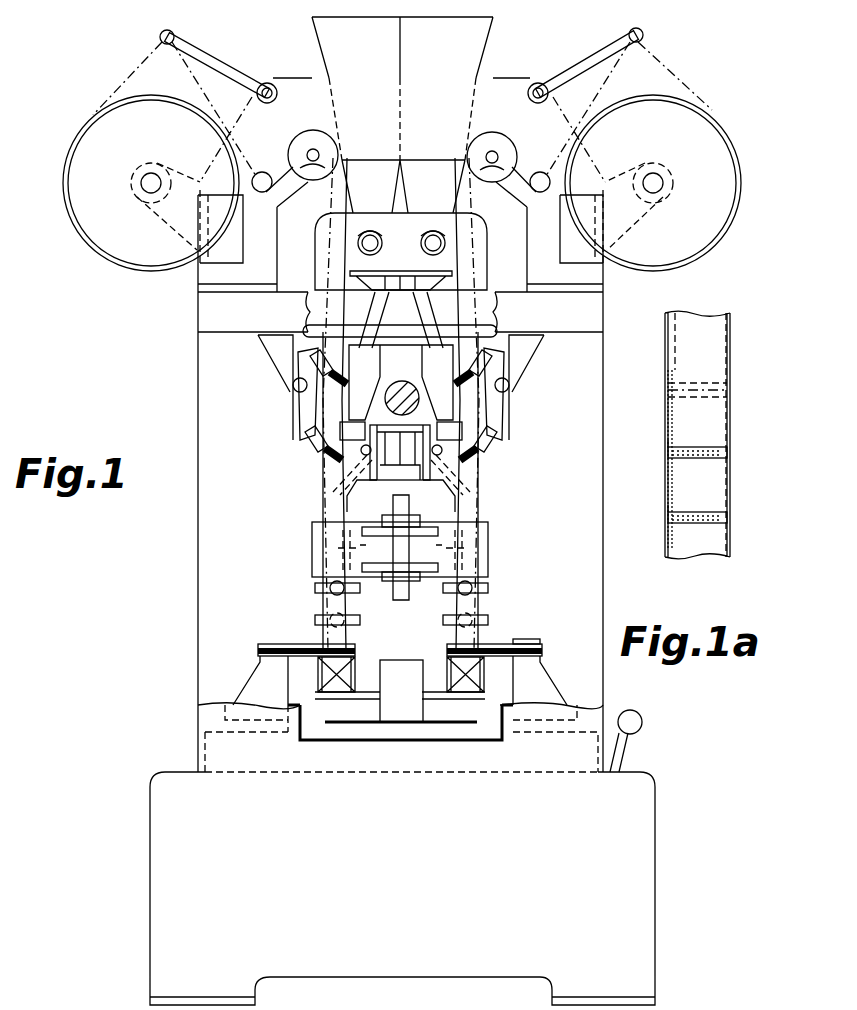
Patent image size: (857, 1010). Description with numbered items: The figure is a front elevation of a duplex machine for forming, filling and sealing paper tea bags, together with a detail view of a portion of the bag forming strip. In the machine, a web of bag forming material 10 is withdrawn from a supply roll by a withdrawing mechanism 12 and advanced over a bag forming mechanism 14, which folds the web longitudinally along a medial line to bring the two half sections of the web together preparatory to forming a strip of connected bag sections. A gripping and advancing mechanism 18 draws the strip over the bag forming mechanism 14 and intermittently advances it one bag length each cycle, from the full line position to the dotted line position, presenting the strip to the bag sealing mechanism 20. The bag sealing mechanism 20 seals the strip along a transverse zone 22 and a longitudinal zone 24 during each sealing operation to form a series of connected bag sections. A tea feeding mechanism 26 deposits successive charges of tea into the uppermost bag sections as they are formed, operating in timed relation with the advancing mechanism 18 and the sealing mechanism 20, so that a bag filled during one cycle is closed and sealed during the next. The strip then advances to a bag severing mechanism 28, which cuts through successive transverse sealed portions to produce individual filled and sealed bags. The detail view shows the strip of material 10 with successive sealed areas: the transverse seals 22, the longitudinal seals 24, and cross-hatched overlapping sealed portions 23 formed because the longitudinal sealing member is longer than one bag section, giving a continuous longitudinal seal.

In FIG. 1, the web of bag forming material 10 is at (143, 60).
In FIG. 1A, the web of bag forming material 10 is at (732, 330).
In FIG. 1, the withdrawing mechanism 12 is at (318, 128).
In FIG. 1, the bag forming mechanism 14 is at (338, 283).
In FIG. 1, the gripping and advancing mechanism 18 is at (308, 616).
In FIG. 1, the bag sealing mechanism 20 is at (304, 535).
In FIG. 1, the transverse zone 22 is at (320, 556).
In FIG. 1A, the transverse zone 22 is at (705, 383).
In FIG. 1A, the overlapping sealed portions 23 is at (668, 444).
In FIG. 1, the longitudinal zone 24 is at (401, 551).
In FIG. 1A, the longitudinal zone 24 is at (668, 424).
In FIG. 1, the tea feeding mechanism 26 is at (424, 250).
In FIG. 1, the bag severing mechanism 28 is at (303, 647).